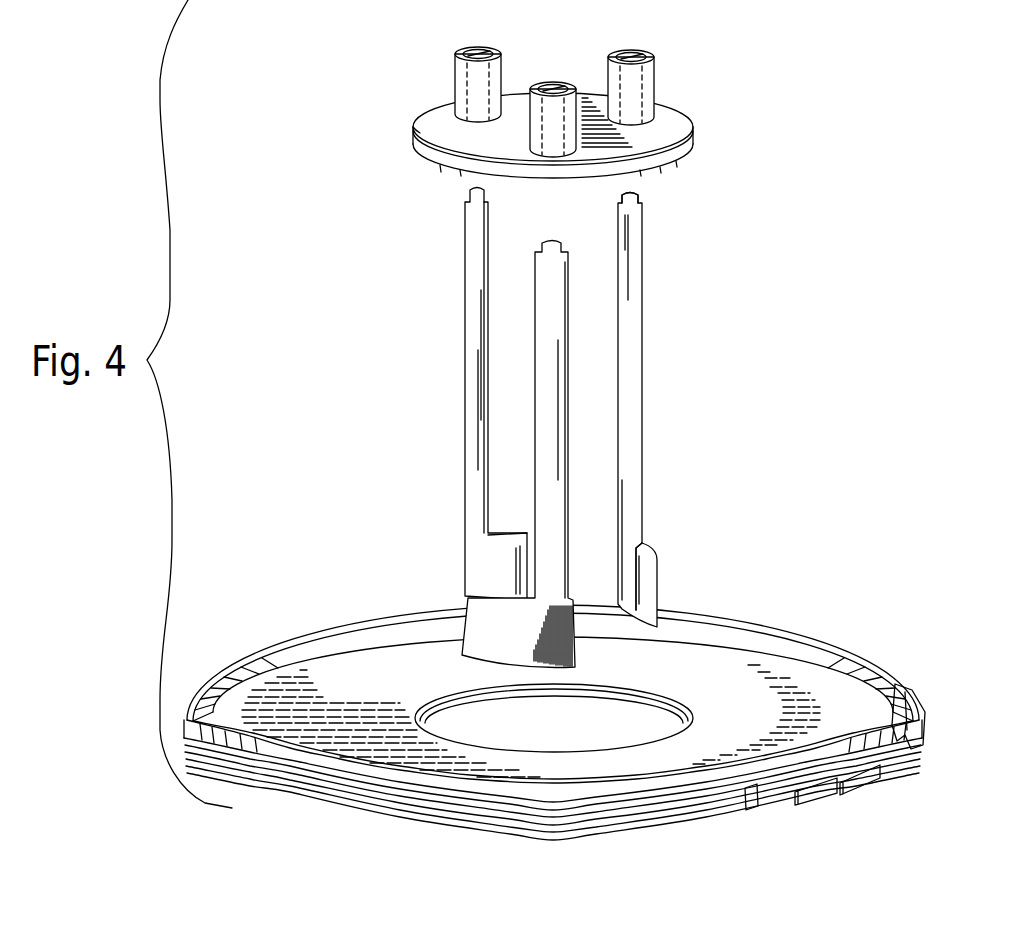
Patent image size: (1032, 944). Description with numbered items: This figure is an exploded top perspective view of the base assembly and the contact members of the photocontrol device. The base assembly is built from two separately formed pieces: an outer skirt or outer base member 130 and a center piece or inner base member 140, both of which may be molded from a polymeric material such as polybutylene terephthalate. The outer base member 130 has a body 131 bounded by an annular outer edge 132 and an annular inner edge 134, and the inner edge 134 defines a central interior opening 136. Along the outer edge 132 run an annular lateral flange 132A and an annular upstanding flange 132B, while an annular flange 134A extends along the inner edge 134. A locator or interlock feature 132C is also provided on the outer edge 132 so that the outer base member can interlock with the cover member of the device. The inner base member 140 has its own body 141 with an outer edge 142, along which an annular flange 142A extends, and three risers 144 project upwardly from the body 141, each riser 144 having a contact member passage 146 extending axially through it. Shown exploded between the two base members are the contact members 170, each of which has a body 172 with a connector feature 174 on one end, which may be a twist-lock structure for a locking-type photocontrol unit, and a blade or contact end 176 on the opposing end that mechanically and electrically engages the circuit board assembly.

The outer base member 130 is at (550, 747).
The body 131 is at (798, 677).
The annular outer edge 132 is at (550, 783).
The annular lateral flange 132A is at (273, 783).
The annular upstanding flange 132B is at (310, 768).
The interlock feature 132C is at (872, 787).
The annular inner edge 134 is at (540, 702).
The annular flange 134A is at (443, 705).
The interior opening 136 is at (669, 690).
The inner base member 140 is at (549, 92).
The body 141 is at (427, 122).
The outer edge 142 is at (495, 115).
The annular flange 142A is at (413, 128).
The riser 144 is at (528, 100).
The contact member passage 146 is at (472, 78).
The contact member 170 is at (522, 383).
The body 172 is at (628, 297).
The connector feature 174 is at (638, 577).
The contact end 176 is at (632, 197).